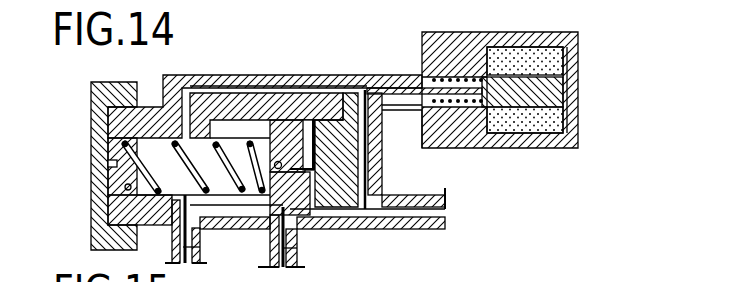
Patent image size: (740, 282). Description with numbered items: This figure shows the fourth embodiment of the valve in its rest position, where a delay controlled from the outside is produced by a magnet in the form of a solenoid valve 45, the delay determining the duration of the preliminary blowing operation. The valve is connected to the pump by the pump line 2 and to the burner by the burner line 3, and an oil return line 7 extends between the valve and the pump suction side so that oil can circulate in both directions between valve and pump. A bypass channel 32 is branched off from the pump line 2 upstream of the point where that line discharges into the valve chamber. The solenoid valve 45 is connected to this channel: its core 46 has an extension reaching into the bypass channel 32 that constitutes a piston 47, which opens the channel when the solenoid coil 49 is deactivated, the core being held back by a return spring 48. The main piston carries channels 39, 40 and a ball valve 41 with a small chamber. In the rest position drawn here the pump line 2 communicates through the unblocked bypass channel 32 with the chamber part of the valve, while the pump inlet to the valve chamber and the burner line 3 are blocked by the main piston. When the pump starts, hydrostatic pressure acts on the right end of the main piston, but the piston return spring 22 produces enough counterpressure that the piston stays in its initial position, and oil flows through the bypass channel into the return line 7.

The piston return spring 22 is at (134, 182).
The oil return line 7 is at (200, 247).
The ball valve 41 is at (257, 137).
The channel 39 is at (295, 127).
The channel 40 is at (310, 227).
The bypass channel 32 is at (382, 147).
The pump line 2 is at (400, 212).
The burner line 3 is at (297, 250).
The piston 47 is at (387, 92).
The solenoid valve 45 is at (586, 90).
The core 46 is at (552, 82).
The solenoid coil 49 is at (538, 120).
The return spring 48 is at (467, 103).